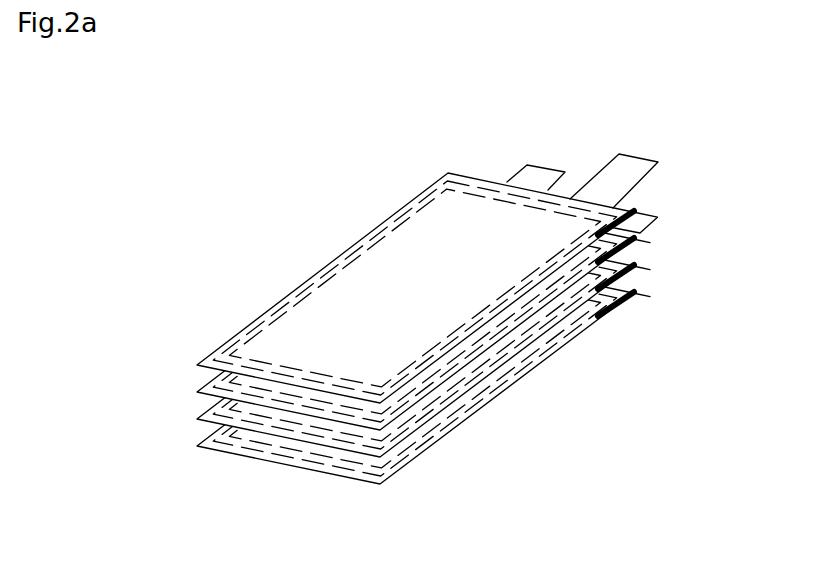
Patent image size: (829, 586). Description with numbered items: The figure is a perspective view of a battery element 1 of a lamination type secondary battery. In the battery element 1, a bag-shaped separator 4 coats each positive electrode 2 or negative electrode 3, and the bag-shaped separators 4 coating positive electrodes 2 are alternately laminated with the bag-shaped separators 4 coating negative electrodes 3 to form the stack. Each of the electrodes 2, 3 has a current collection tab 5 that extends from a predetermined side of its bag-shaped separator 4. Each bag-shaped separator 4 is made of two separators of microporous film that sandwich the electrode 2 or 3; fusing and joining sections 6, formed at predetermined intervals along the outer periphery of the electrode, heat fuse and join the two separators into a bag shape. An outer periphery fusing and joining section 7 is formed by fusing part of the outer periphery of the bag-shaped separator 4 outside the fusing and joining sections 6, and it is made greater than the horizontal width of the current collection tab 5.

The battery element 1 is at (339, 185).
The positive electrode 2 is at (375, 280).
The negative electrode 3 is at (321, 397).
The bag-shaped separator 4 is at (468, 176).
The current collection tab 5 is at (632, 170).
The fusing and joining section 6 is at (488, 305).
The outer periphery fusing and joining section 7 is at (638, 208).